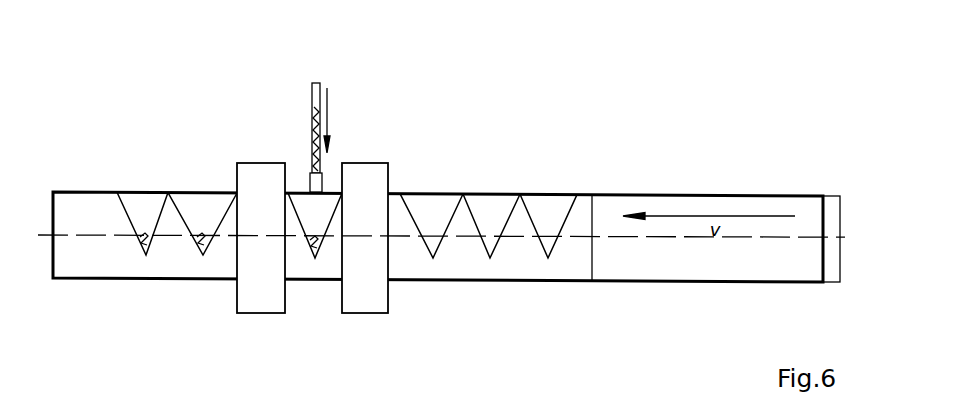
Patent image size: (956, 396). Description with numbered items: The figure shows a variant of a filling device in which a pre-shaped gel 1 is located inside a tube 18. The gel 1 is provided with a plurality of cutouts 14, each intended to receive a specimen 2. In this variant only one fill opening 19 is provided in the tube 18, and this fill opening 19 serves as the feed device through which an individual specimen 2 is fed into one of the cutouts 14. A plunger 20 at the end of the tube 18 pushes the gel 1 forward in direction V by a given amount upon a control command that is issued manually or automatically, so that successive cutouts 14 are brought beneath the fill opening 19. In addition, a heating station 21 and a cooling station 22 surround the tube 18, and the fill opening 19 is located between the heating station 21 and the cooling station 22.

The gel 1 is at (105, 262).
The specimen 2 is at (312, 108).
The cutout 14 is at (142, 202).
The tube 18 is at (542, 190).
The fill opening 19 is at (310, 183).
The plunger 20 is at (835, 198).
The heating station 21 is at (370, 168).
The cooling station 22 is at (248, 170).